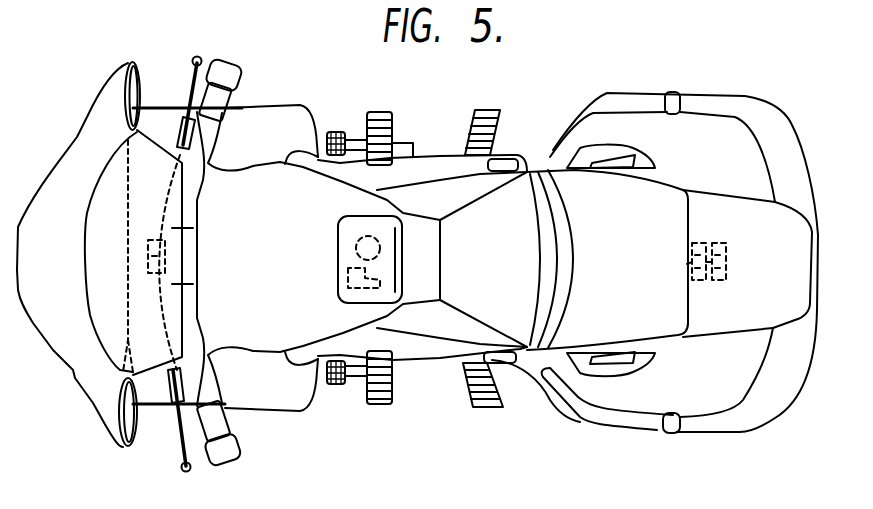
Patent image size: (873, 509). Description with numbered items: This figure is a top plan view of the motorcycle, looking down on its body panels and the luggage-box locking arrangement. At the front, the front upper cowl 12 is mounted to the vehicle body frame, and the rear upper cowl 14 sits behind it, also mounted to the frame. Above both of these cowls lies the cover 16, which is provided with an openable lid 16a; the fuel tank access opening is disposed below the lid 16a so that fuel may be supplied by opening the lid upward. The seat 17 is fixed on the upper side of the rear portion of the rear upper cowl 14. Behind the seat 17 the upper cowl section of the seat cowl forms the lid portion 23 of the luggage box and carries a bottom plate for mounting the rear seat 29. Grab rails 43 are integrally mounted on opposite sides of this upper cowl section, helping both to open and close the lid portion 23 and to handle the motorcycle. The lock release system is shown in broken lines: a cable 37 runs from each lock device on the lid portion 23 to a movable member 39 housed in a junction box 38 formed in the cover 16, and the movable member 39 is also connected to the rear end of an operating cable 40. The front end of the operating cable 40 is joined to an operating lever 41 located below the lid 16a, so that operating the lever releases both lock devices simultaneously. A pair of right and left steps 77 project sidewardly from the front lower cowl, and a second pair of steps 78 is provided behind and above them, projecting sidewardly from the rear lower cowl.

The front upper cowl 12 is at (273, 115).
The rear upper cowl 14 is at (443, 163).
The cover 16 is at (302, 188).
The openable lid 16a is at (338, 233).
The seat 17 is at (472, 297).
The lid portion 23 is at (710, 400).
The rear seat 29 is at (563, 338).
The cable 37 is at (728, 257).
The junction box 38 is at (722, 243).
The movable member 39 is at (702, 243).
The operating cable 40 is at (687, 264).
The operating lever 41 is at (337, 290).
The grab rails 43 is at (647, 163).
The steps 77 is at (385, 112).
The pedal 78 is at (487, 110).